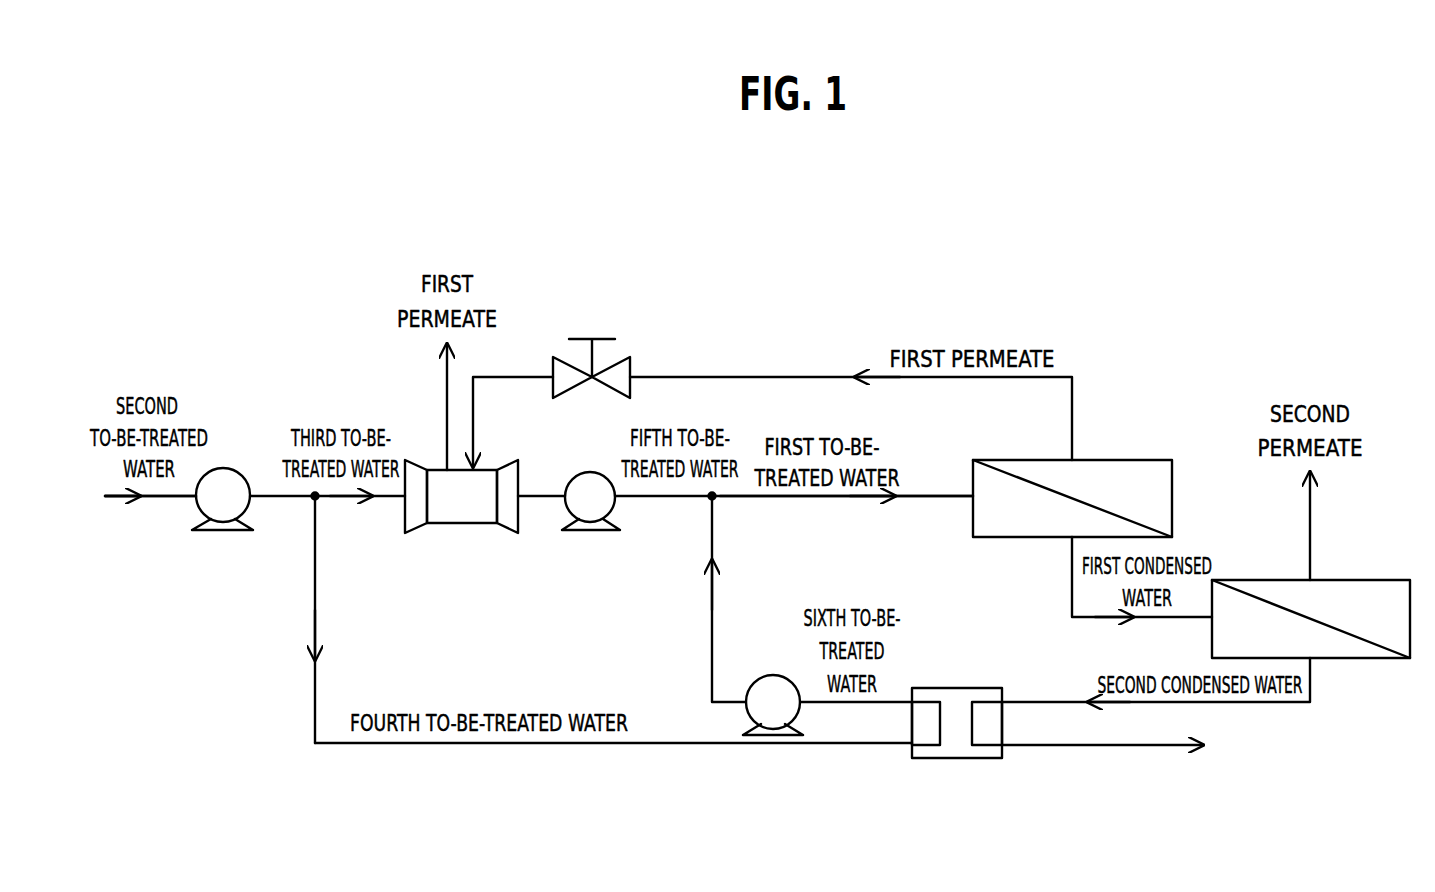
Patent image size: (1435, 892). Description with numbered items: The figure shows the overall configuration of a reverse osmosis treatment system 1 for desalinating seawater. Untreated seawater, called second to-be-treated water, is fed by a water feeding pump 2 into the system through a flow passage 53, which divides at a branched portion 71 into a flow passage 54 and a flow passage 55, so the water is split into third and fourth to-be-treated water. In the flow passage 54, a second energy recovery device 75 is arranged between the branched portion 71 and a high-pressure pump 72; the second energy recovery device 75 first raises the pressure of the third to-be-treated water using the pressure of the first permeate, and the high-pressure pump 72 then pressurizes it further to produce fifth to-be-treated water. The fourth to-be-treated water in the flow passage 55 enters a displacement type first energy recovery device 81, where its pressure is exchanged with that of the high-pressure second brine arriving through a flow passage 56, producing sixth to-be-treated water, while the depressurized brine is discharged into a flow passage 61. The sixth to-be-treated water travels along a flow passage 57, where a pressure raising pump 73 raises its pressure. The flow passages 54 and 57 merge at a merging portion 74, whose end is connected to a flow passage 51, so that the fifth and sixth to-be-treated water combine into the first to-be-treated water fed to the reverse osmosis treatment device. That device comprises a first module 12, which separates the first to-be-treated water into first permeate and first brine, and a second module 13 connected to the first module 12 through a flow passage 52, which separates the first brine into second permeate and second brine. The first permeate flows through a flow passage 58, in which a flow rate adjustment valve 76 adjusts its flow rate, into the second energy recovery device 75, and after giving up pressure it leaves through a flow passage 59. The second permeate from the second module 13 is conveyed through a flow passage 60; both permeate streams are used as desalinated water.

The reverse osmosis treatment system 1 is at (290, 278).
The water feeding pump 2 is at (228, 467).
The first module 12 is at (1125, 460).
The second module 13 is at (1363, 580).
The flow passage 51 is at (842, 498).
The flow passage 52 is at (1070, 588).
The flow passage 53 is at (168, 498).
The flow passage 54 is at (661, 498).
The flow passage 55 is at (312, 619).
The flow passage 56 is at (1040, 700).
The flow passage 57 is at (710, 619).
The flow passage 58 is at (766, 376).
The flow passage 59 is at (445, 388).
The flow passage 60 is at (1308, 523).
The flow passage 61 is at (1040, 748).
The branched portion 71 is at (310, 503).
The high-pressure pump 72 is at (592, 470).
The pressure raising pump 73 is at (774, 675).
The merging portion 74 is at (722, 505).
The second energy recovery device 75 is at (463, 526).
The flow rate adjustment valve 76 is at (613, 350).
The first energy recovery device 81 is at (957, 688).